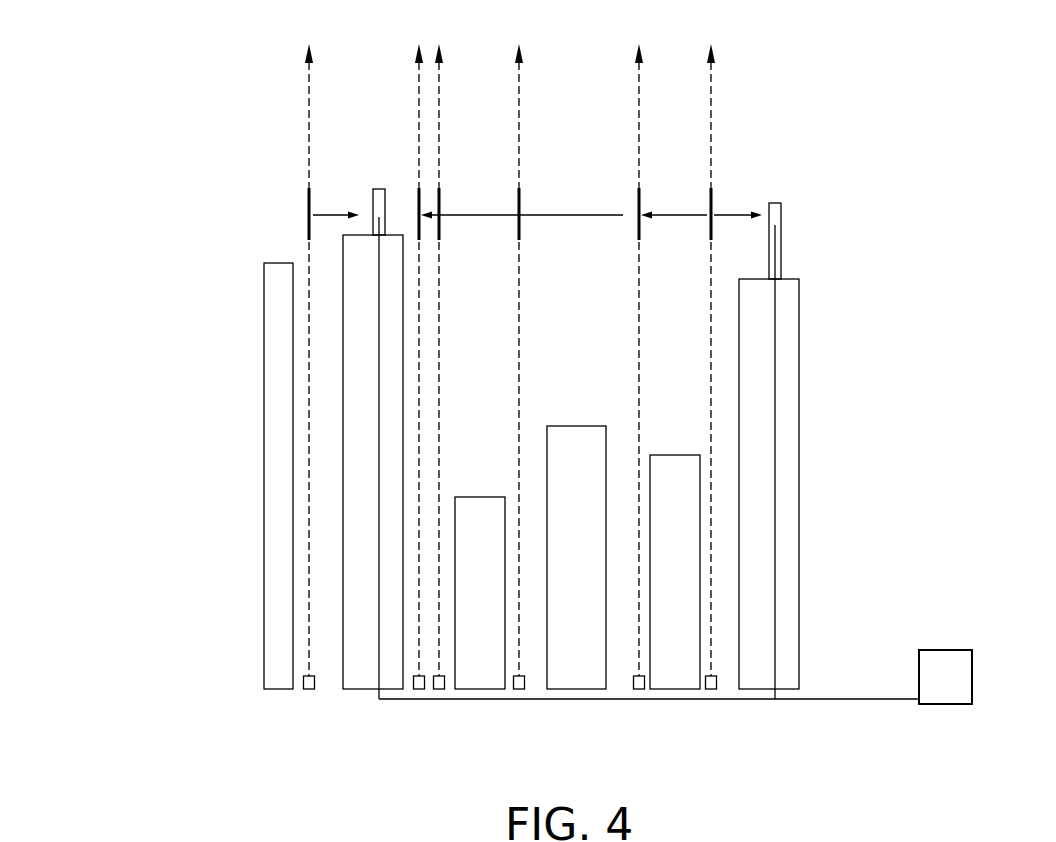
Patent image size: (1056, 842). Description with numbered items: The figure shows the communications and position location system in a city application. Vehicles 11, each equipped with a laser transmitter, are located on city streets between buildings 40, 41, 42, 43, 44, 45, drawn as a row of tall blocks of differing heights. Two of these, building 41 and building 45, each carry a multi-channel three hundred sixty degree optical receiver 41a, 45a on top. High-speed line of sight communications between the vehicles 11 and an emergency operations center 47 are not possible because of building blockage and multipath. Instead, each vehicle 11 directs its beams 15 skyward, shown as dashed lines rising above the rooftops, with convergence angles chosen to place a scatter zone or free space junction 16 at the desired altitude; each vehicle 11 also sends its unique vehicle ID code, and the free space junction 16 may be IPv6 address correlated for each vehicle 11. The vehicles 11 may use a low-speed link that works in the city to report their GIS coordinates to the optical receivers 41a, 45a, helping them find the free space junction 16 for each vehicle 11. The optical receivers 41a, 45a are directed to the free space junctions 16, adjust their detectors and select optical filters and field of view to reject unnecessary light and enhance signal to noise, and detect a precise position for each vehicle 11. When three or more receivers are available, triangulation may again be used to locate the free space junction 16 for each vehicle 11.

The vehicle 11 is at (315, 685).
The beam 15 is at (417, 86).
The free space junction 16 is at (308, 222).
The building 40 is at (263, 378).
The building 41 is at (343, 380).
The multi-channel 360 degree optical receiver 41a is at (375, 188).
The building 42 is at (481, 496).
The building 43 is at (577, 425).
The building 44 is at (675, 454).
The building 45 is at (800, 279).
The multi-channel 360 degree optical receiver 45a is at (771, 202).
The emergency operations center 47 is at (955, 650).